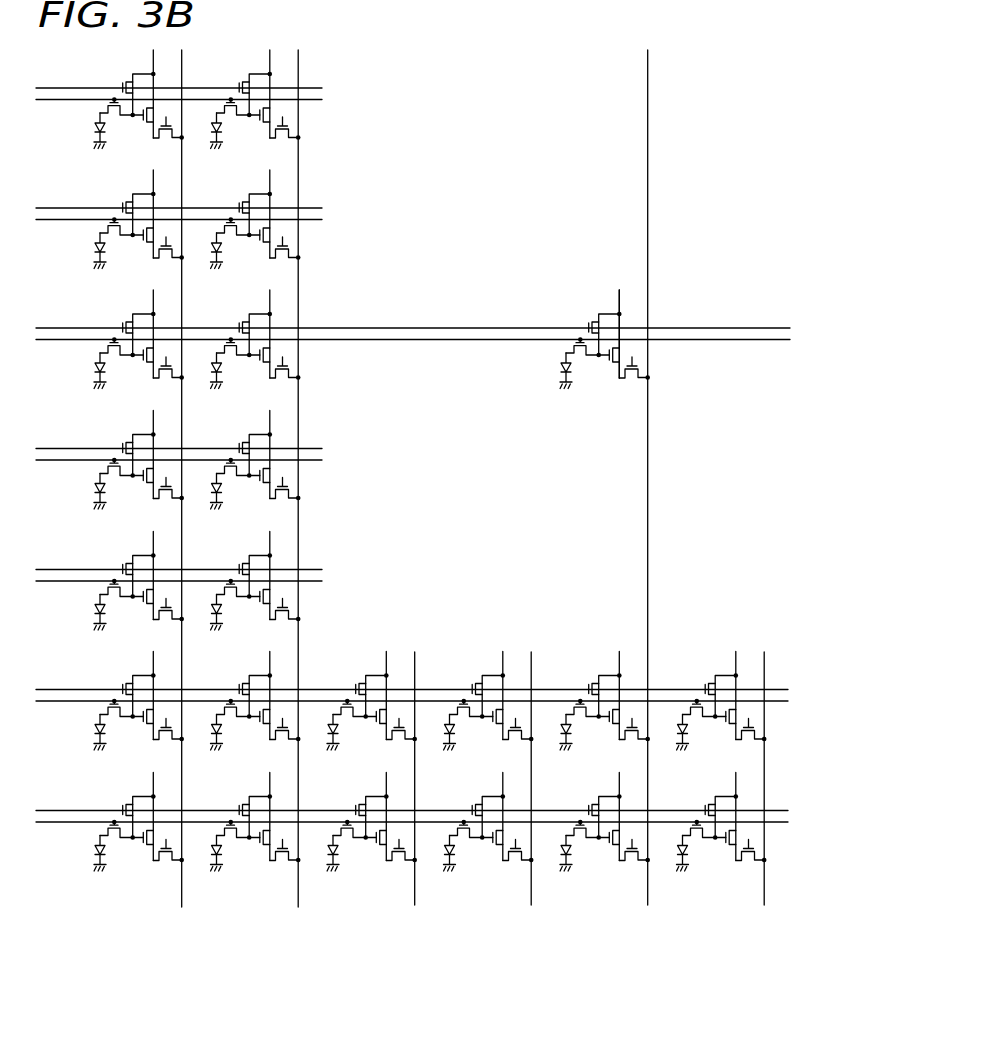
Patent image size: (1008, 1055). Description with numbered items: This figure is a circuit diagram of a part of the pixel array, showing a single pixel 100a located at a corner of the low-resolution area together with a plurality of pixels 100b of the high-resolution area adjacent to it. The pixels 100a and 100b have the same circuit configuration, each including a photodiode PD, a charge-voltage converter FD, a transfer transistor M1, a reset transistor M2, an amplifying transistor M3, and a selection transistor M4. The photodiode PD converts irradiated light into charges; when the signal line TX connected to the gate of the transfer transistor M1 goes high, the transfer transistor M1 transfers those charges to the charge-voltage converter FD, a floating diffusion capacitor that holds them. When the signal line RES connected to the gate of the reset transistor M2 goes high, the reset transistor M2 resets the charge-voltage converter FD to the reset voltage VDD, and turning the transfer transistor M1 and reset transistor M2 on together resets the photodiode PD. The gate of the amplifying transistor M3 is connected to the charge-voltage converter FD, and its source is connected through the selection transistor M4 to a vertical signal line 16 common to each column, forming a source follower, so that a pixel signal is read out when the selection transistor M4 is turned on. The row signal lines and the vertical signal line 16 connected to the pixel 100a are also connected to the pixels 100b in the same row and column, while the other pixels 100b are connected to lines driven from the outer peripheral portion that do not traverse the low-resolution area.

The transfer transistor M1 is at (348, 625).
The reset transistor M2 is at (350, 545).
The amplifying transistor M3 is at (416, 604).
The selection transistor M4 is at (401, 632).
The photodiode PD is at (308, 612).
The charge-voltage converter FD is at (364, 621).
The reset voltage VDD is at (619, 320).
The vertical signal line 16 is at (648, 543).
The pixel 100a is at (578, 442).
The pixel 100b is at (104, 921).